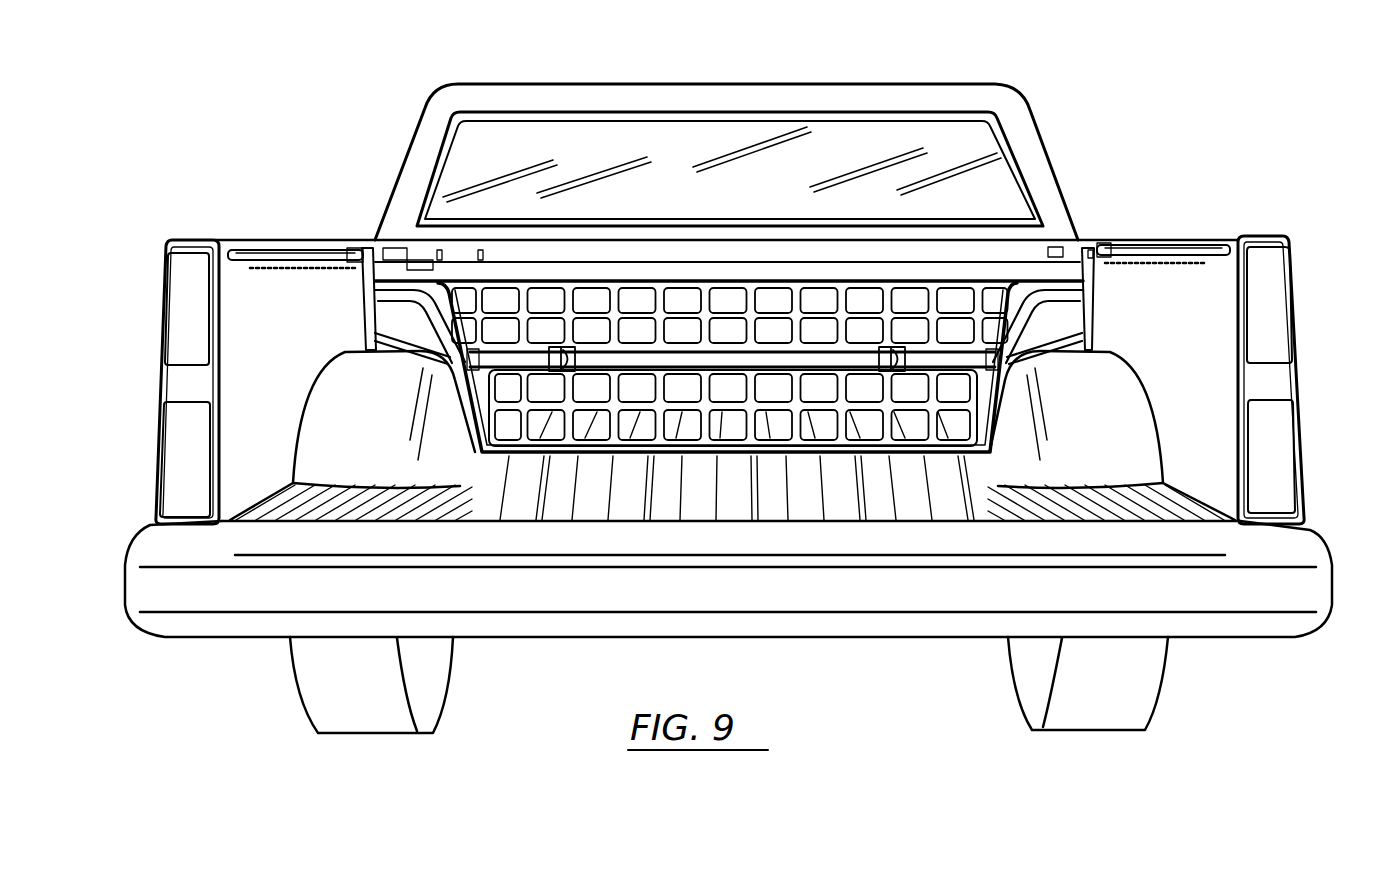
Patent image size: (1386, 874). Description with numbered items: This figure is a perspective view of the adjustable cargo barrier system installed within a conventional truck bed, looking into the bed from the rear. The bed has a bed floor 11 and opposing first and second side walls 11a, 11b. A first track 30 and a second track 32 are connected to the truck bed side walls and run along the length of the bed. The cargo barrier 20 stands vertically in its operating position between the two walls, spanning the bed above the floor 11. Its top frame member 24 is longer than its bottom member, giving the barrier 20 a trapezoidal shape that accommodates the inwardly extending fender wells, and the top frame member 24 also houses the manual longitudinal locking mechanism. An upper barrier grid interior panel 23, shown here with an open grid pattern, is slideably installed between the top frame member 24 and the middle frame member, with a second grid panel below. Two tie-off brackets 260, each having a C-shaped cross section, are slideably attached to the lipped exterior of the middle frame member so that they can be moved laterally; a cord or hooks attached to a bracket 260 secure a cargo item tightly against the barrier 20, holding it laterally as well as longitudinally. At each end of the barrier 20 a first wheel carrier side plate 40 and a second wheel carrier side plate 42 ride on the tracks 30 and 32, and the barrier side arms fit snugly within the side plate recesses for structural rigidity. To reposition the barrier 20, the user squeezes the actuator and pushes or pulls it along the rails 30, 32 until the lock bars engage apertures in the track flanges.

The bed floor 11 is at (653, 510).
The first side wall 11a is at (233, 290).
The second side wall 11b is at (1207, 338).
The cargo barrier 20 is at (823, 265).
The upper barrier grid interior panel 23 is at (706, 300).
The top frame member 24 is at (668, 273).
The first track 30 is at (240, 258).
The second track 32 is at (1192, 250).
The first wheel carrier side plate 40 is at (370, 273).
The second wheel carrier side plate 42 is at (1084, 263).
The tie-off bracket 260 is at (560, 350).